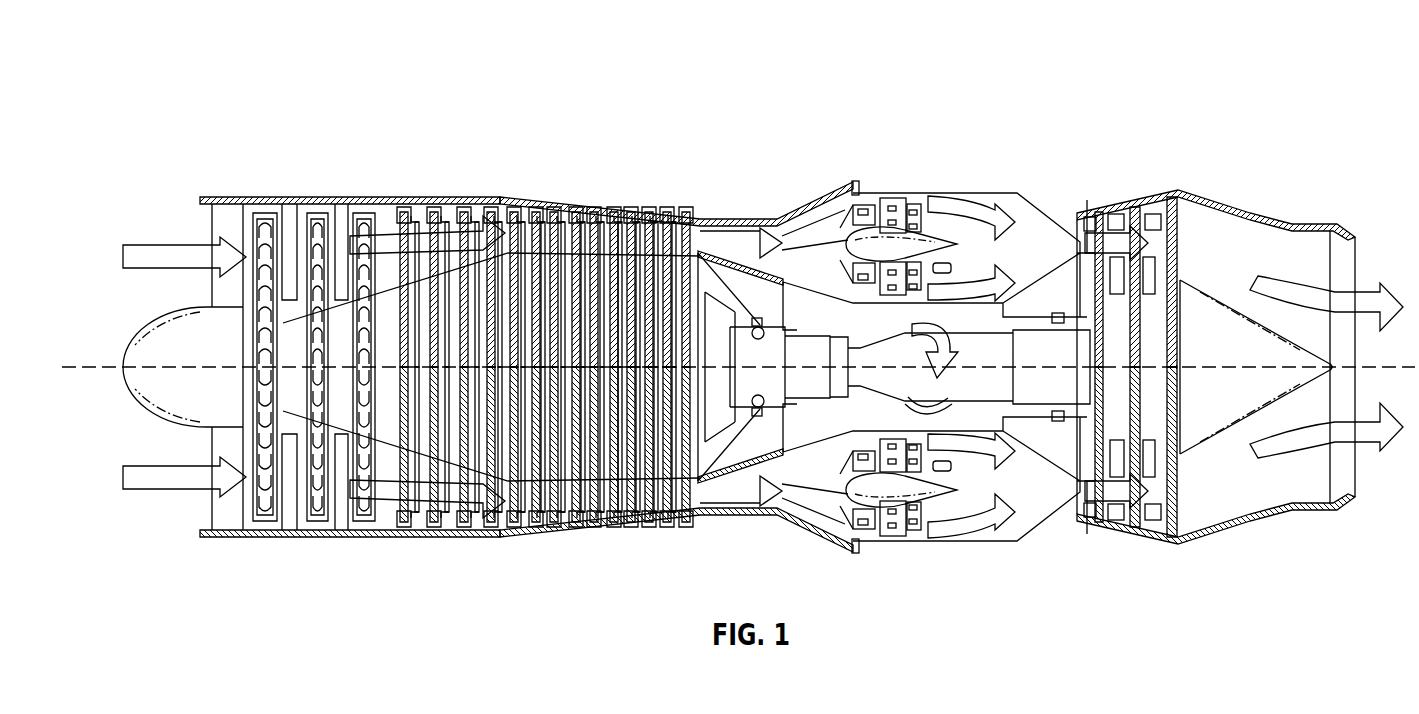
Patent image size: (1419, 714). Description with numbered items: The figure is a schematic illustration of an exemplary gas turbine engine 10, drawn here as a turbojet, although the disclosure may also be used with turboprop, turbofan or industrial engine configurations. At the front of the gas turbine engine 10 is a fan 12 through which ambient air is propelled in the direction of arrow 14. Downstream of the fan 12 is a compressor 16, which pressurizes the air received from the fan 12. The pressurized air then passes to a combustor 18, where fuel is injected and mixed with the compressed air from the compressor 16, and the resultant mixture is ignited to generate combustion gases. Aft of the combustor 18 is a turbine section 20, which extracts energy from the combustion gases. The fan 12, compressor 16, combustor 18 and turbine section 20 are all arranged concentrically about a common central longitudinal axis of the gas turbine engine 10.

The gas turbine engine 10 is at (136, 77).
The fan 12 is at (228, 197).
The arrow 14 is at (181, 244).
The compressor 16 is at (470, 197).
The combustor 18 is at (898, 191).
The turbine section 20 is at (1113, 526).